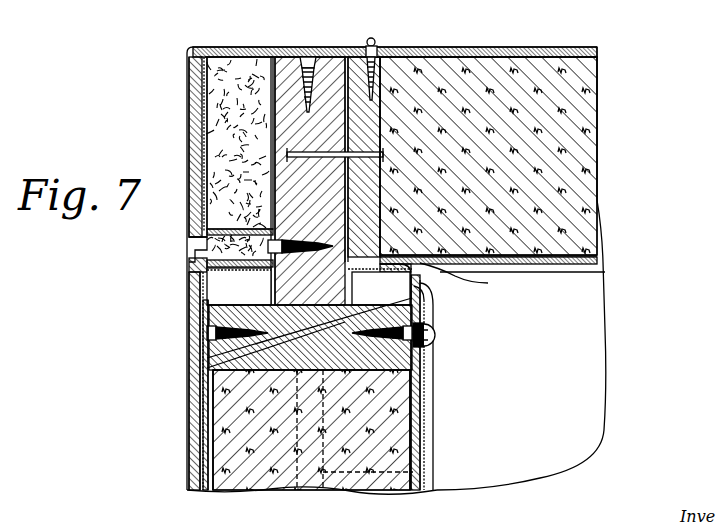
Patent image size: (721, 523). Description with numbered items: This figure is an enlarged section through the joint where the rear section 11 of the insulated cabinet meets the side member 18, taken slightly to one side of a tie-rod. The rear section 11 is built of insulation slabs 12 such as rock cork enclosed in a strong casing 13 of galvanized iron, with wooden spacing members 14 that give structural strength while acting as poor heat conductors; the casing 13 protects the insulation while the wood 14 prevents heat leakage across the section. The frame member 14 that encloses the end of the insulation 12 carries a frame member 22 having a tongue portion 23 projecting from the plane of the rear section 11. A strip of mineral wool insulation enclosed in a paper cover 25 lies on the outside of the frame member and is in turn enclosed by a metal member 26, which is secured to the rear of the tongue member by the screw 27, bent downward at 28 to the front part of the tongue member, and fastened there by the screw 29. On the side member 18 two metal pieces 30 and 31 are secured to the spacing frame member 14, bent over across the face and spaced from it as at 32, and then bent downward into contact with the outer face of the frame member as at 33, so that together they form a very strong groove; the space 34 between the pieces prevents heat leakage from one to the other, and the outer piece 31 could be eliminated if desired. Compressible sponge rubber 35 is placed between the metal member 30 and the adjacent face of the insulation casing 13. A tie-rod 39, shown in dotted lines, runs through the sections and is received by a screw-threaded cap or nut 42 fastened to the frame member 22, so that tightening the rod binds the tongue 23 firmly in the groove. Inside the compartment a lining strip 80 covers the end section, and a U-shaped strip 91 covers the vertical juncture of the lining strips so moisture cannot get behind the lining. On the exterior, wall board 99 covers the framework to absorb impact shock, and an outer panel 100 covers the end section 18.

The rear section 11 is at (518, 55).
The insulation slabs 12 is at (450, 72).
The casing 13 is at (582, 265).
The spacing member 14 is at (381, 57).
The side member 18 is at (222, 408).
The frame member 22 is at (305, 235).
The tongue portion 23 is at (412, 298).
The paper cover 25 is at (187, 97).
The metal member 26 is at (236, 47).
The screw 27 is at (345, 238).
The bend 28 is at (200, 238).
The screw 29 is at (198, 270).
The metal piece 30 is at (423, 386).
The metal piece 31 is at (215, 345).
The bent-over portion 32 is at (424, 285).
The downward bend 33 is at (200, 292).
The space 34 is at (212, 308).
The sponge rubber 35 is at (445, 274).
The tie-rod 39 is at (413, 468).
The cap or nut 42 is at (350, 200).
The lining strip 80 is at (424, 425).
The U-shaped strip 91 is at (433, 347).
The wall board 99 is at (195, 443).
The outer panel 100 is at (200, 430).